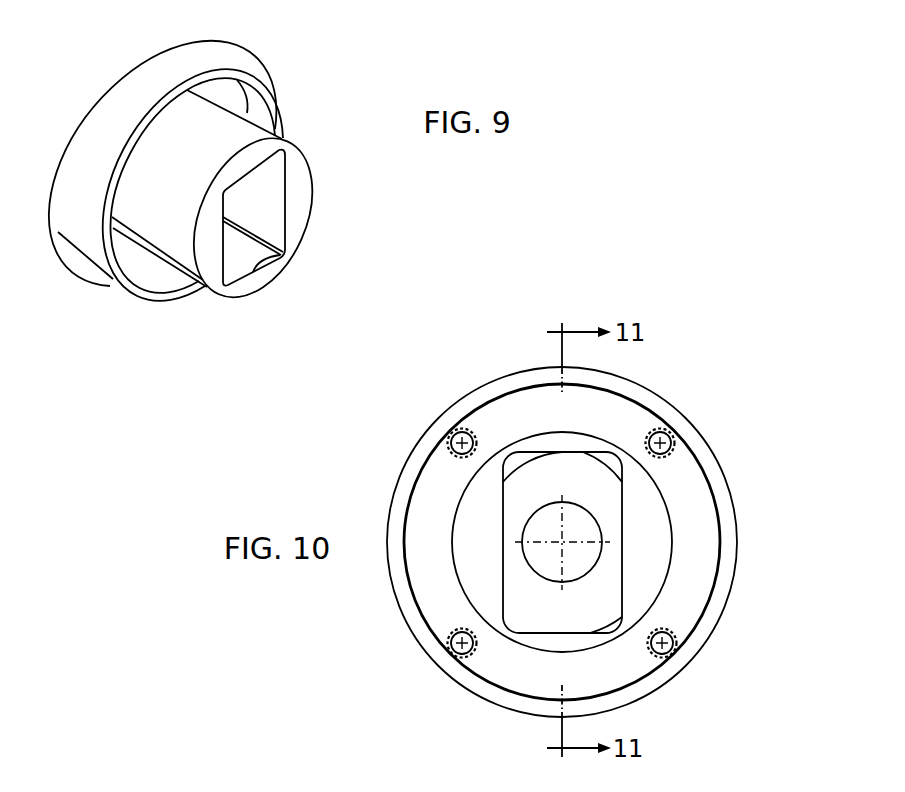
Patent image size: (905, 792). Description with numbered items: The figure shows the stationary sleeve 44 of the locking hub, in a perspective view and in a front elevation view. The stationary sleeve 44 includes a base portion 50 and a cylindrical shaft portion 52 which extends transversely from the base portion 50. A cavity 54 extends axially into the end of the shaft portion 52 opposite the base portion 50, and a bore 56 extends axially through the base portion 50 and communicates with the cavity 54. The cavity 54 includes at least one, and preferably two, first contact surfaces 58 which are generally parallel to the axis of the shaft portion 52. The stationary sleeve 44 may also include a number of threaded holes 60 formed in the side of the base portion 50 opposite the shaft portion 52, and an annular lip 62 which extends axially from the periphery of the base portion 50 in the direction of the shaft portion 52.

In FIG. 9, the stationary sleeve 44 is at (330, 106).
In FIG. 10, the stationary sleeve 44 is at (752, 372).
In FIG. 9, the base portion 50 is at (133, 262).
In FIG. 10, the base portion 50 is at (705, 527).
In FIG. 9, the cylindrical shaft portion 52 is at (313, 192).
In FIG. 10, the cylindrical shaft portion 52 is at (715, 575).
In FIG. 9, the cavity 54 is at (289, 254).
In FIG. 10, the cavity 54 is at (600, 616).
In FIG. 10, the bore 56 is at (597, 530).
In FIG. 9, the first contact surfaces 58 is at (263, 220).
In FIG. 10, the first contact surfaces 58 is at (562, 452).
In FIG. 10, the threaded holes 60 is at (452, 430).
In FIG. 9, the annular lip 62 is at (270, 78).
In FIG. 10, the annular lip 62 is at (647, 688).